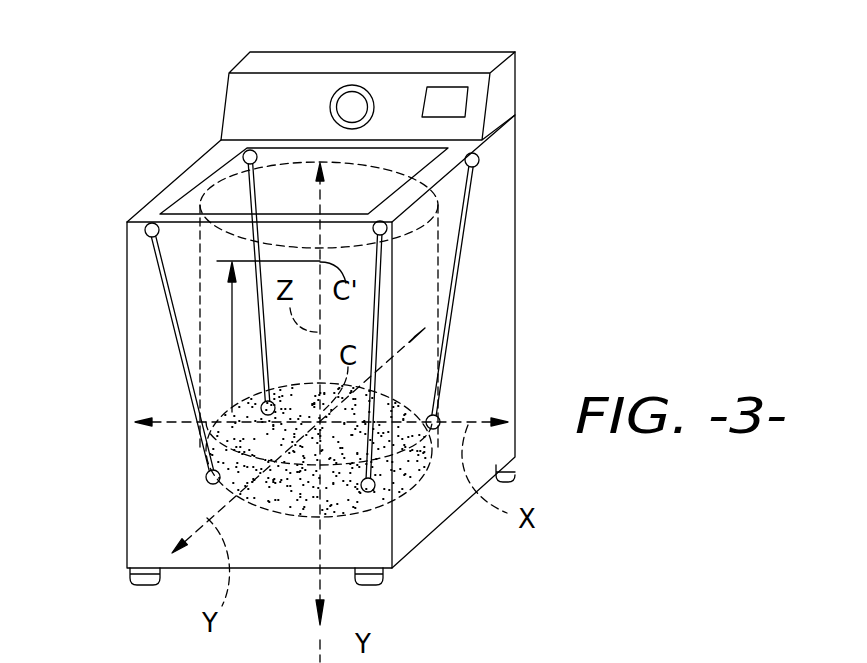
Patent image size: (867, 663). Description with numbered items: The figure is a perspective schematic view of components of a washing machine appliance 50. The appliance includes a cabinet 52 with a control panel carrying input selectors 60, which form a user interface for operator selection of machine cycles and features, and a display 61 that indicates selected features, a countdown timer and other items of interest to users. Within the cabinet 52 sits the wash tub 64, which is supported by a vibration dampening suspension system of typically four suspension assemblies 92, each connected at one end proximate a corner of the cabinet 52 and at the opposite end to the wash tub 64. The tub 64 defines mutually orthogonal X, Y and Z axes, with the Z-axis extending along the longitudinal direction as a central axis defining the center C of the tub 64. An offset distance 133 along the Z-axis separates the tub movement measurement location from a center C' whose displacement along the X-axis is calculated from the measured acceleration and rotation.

The washing machine appliance 50 is at (583, 78).
The cabinet 52 is at (493, 268).
The input selector 60 is at (348, 103).
The display 61 is at (437, 98).
The wash tub 64 is at (200, 278).
The suspension assembly 92 is at (250, 191).
The offset distance 133 is at (232, 350).